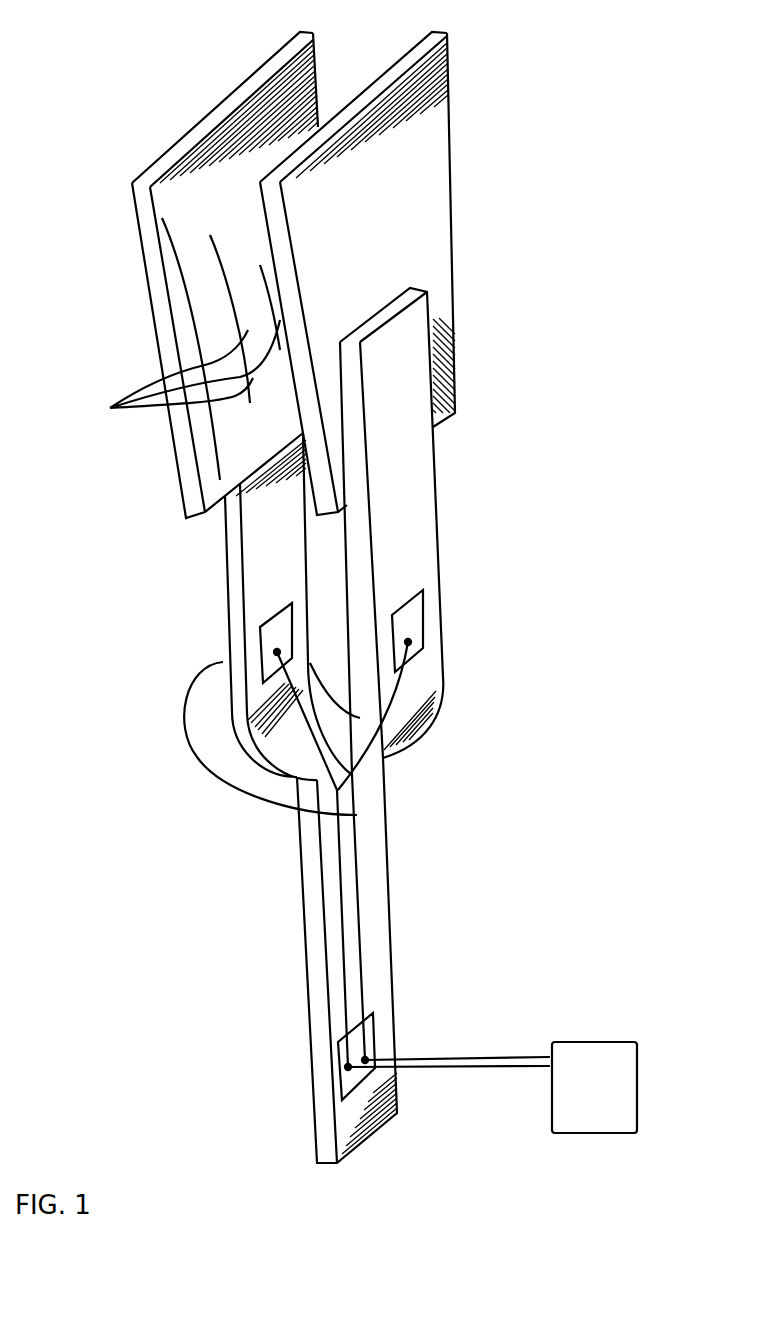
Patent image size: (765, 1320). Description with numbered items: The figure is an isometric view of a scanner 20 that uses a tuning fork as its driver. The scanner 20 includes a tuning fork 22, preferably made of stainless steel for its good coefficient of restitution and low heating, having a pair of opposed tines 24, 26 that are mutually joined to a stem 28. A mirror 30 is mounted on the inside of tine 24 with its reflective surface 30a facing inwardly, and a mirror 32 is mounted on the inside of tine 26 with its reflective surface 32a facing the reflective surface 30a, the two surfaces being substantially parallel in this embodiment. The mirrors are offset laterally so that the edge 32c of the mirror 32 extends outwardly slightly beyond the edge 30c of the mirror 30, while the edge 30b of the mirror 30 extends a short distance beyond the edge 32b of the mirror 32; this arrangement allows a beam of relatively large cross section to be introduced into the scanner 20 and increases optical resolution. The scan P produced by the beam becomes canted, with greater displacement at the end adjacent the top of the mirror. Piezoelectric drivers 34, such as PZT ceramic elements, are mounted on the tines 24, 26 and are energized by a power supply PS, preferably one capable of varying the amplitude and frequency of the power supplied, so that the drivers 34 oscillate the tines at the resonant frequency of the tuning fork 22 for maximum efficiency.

The scanner 20 is at (112, 120).
The tuning fork 22 is at (400, 723).
The tine 24 is at (437, 540).
The tine 26 is at (227, 570).
The stem 28 is at (385, 906).
The mirror 30 is at (433, 202).
The reflective surface 30a is at (365, 91).
The edge 30b is at (313, 437).
The edge 30c is at (437, 22).
The mirror 32 is at (134, 237).
The reflective surface 32a is at (233, 135).
The edge 32b is at (174, 354).
The edge 32c is at (320, 45).
The drivers 34 is at (282, 630).
The scan P is at (183, 375).
The power supply PS is at (585, 1042).